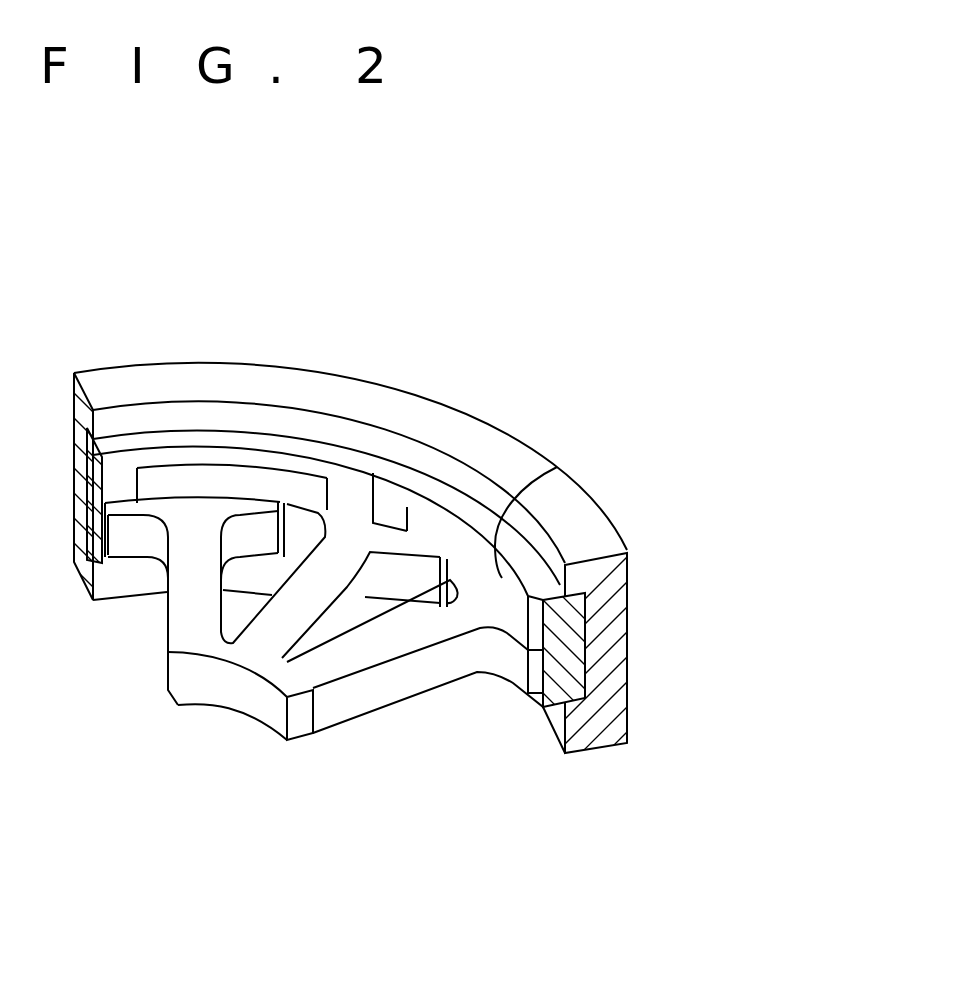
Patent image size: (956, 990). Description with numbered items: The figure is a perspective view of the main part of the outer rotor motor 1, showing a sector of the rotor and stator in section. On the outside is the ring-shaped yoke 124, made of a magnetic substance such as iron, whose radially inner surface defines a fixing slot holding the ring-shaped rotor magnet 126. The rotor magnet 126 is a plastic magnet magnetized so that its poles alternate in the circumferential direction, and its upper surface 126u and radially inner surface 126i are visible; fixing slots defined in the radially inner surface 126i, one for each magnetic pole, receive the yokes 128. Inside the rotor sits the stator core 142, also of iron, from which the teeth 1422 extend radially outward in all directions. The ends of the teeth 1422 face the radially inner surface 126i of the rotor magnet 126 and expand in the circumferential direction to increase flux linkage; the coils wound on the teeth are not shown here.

The outer rotor motor 1 is at (470, 412).
The yoke 124 is at (592, 538).
The rotor magnet 126 is at (547, 590).
The upper surface of inner ring 126u is at (220, 437).
The radially inner surface 126i is at (395, 500).
The yoke 128 is at (556, 469).
The stator core 142 is at (243, 705).
The teeth 1422 is at (377, 692).